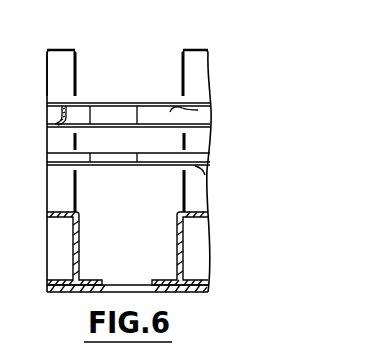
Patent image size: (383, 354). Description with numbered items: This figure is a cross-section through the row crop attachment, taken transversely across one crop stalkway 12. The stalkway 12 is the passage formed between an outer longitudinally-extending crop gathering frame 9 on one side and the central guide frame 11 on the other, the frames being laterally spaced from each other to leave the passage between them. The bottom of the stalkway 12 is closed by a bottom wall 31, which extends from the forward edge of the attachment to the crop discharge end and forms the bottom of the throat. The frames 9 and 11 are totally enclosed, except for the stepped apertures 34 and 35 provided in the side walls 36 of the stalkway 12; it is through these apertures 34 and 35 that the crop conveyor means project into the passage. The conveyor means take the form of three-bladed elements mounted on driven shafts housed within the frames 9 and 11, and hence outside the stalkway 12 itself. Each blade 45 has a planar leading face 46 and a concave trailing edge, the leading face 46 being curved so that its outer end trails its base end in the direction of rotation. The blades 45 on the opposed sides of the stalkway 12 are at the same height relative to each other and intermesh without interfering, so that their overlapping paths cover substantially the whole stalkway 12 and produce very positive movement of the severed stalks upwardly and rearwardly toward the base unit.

The outer crop gathering frame 9 is at (190, 50).
The central guide frame 11 is at (61, 50).
The crop stalkway 12 is at (131, 231).
The bottom wall 31 is at (123, 285).
The stepped aperture 34 is at (182, 100).
The stepped aperture 35 is at (183, 156).
The side wall 36 is at (181, 73).
The blade 45 is at (197, 128).
The planar leading face 46 is at (212, 116).